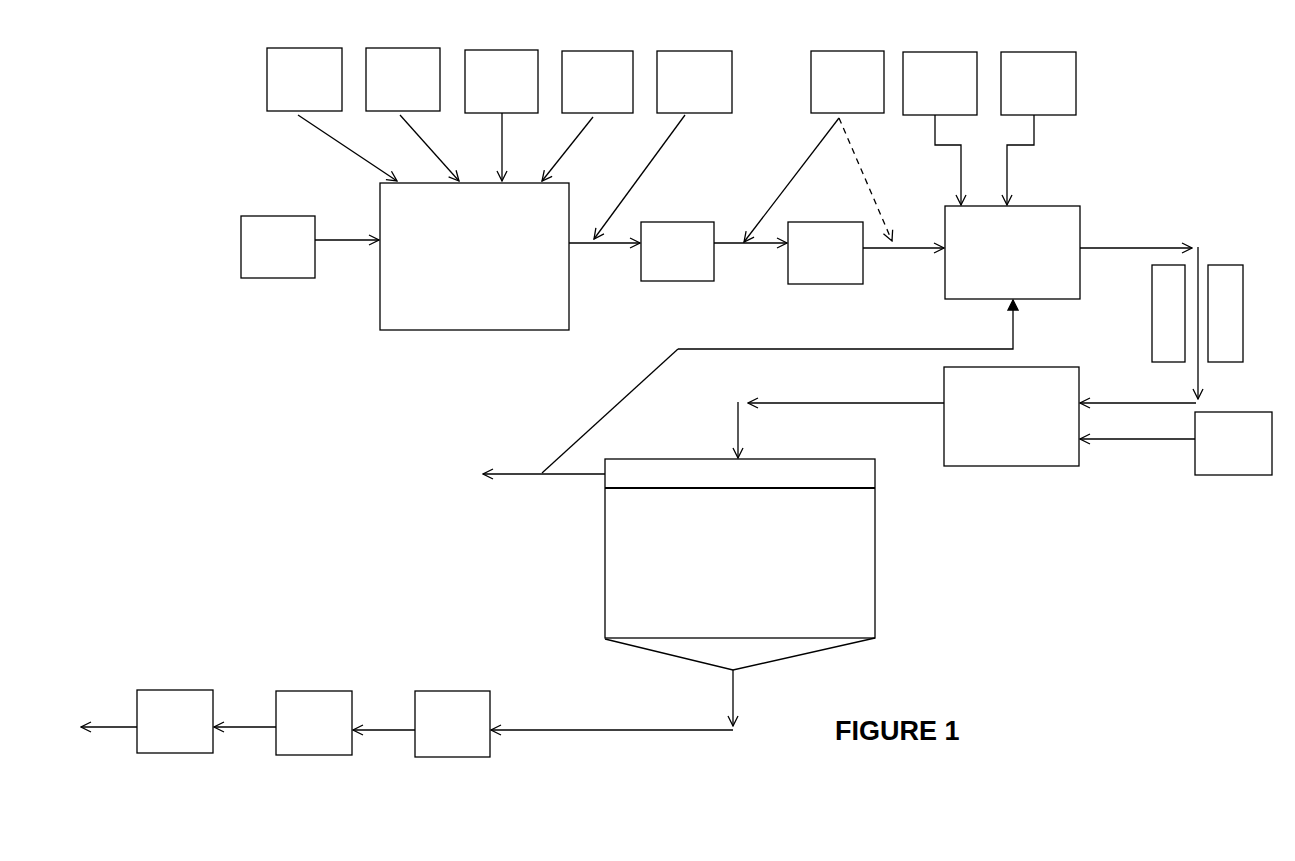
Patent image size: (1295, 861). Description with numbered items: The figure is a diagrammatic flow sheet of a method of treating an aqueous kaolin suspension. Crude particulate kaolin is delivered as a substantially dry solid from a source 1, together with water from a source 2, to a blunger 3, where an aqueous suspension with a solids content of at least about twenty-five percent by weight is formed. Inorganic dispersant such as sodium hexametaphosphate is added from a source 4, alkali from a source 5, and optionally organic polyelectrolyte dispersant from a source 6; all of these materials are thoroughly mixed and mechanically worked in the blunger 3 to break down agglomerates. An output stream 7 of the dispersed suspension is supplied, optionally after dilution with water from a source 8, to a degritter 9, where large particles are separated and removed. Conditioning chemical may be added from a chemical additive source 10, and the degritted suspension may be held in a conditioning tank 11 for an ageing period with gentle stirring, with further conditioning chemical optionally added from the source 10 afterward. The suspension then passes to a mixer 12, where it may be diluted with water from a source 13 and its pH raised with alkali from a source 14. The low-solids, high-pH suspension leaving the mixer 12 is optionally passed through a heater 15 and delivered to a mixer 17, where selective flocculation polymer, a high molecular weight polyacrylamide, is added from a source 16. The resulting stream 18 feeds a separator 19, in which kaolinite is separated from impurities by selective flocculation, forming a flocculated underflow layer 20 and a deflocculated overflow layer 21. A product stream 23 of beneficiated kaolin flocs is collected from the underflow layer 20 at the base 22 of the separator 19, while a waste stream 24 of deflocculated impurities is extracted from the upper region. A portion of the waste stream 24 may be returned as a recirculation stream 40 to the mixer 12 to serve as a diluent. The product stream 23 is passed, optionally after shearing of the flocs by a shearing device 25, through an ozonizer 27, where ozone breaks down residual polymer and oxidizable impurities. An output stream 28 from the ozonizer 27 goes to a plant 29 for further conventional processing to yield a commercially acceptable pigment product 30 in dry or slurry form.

The source of crude kaolin 1 is at (270, 258).
The source of water 2 is at (287, 88).
The blunger 3 is at (498, 308).
The source of inorganic dispersant 4 is at (395, 88).
The source of alkali 5 is at (498, 90).
The source of organic polyelectrolyte dispersant 6 is at (581, 90).
The output stream 7 is at (610, 247).
The source of dilution water 8 is at (673, 90).
The degritter 9 is at (674, 262).
The chemical additive source 10 is at (826, 90).
The conditioning tank 11 is at (822, 262).
The mixer 12 is at (953, 262).
The source of water 13 is at (927, 90).
The source of alkali 14 is at (1050, 92).
The heater 15 is at (1235, 310).
The source of selective flocculation polymer 16 is at (1228, 453).
The mixer 17 is at (1023, 468).
The stream 18 is at (895, 407).
The separator 19 is at (875, 600).
The flocculated underflow layer 20 is at (620, 550).
The deflocculated overflow layer 21 is at (640, 472).
The base 22 is at (662, 645).
The product stream 23 is at (735, 687).
The waste stream 24 is at (575, 467).
The shearing device 25 is at (447, 695).
The ozonizer 27 is at (292, 695).
The output stream 28 is at (243, 727).
The plant 29 is at (170, 753).
The pigment product 30 is at (103, 726).
The recirculation stream 40 is at (791, 386).